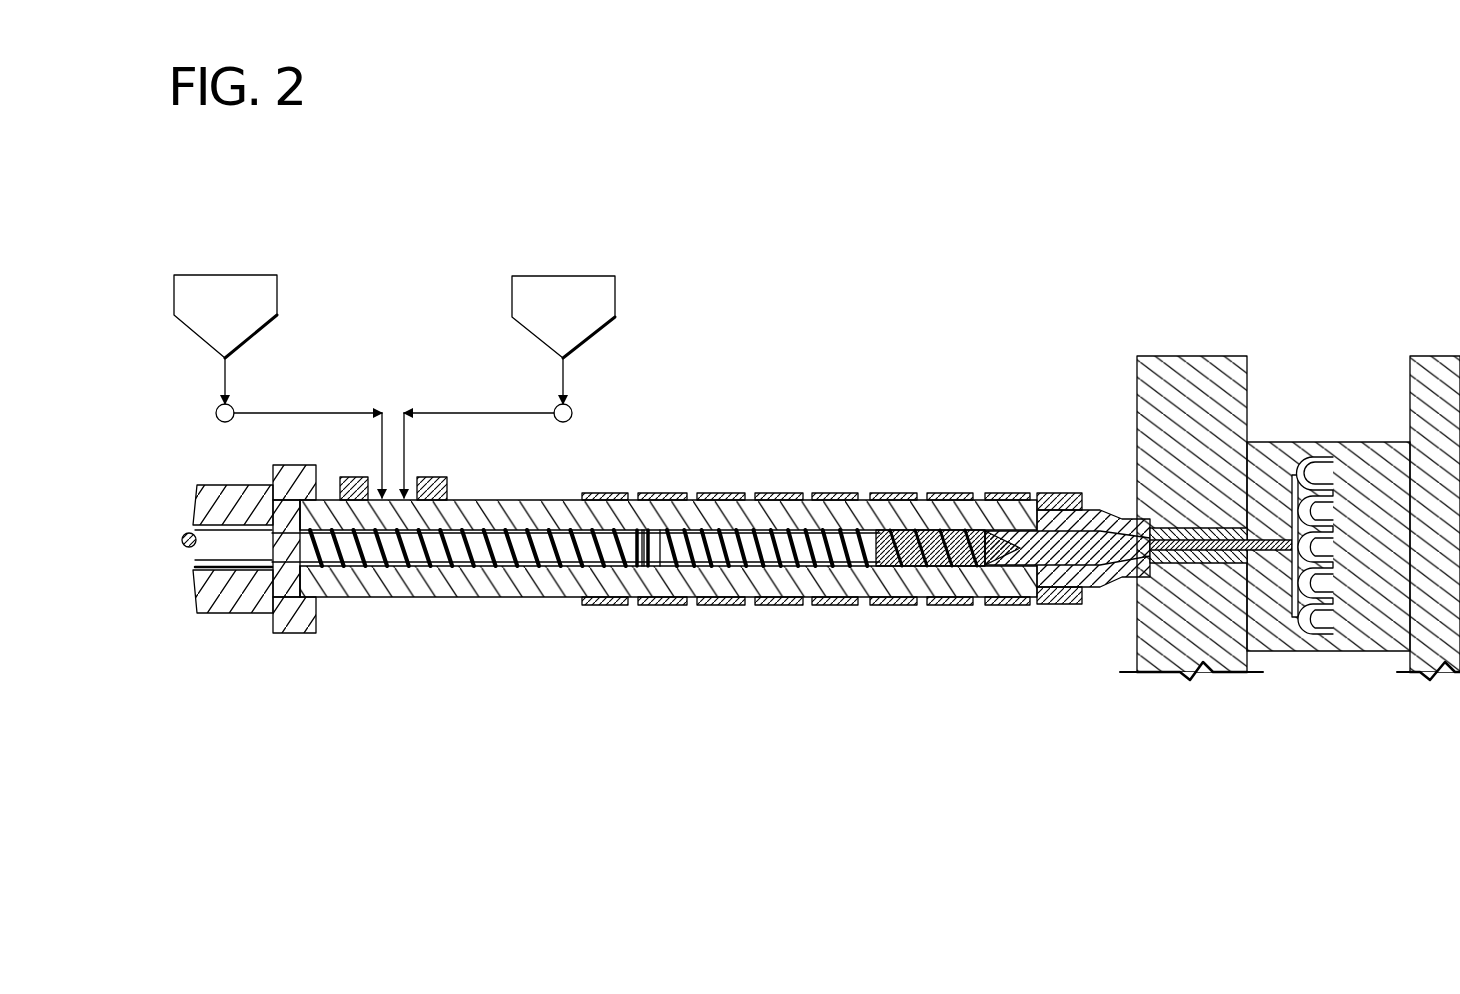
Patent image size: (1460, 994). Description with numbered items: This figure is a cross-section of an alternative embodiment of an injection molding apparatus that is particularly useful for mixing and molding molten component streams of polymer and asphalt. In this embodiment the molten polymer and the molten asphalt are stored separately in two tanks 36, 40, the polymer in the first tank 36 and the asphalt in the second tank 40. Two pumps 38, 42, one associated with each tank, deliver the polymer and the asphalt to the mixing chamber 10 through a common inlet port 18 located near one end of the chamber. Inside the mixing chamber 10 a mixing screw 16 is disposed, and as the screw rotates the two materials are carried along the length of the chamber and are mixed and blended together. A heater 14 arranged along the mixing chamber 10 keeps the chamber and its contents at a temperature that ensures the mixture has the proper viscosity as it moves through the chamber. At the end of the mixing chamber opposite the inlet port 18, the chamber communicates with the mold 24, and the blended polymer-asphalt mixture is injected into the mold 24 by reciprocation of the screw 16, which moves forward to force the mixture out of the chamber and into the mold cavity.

The mixing chamber 10 is at (1085, 657).
The heater 14 is at (612, 493).
The mixing screw 16 is at (727, 535).
The inlet port 18 is at (410, 490).
The mold 24 is at (1312, 442).
The tank 36 is at (283, 290).
The pump 38 is at (215, 412).
The tank 40 is at (615, 291).
The pump 42 is at (572, 409).